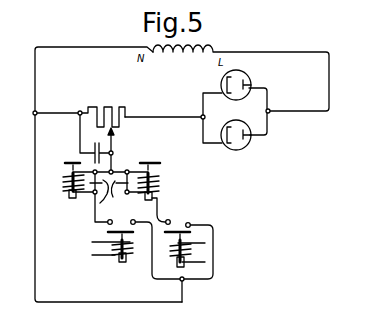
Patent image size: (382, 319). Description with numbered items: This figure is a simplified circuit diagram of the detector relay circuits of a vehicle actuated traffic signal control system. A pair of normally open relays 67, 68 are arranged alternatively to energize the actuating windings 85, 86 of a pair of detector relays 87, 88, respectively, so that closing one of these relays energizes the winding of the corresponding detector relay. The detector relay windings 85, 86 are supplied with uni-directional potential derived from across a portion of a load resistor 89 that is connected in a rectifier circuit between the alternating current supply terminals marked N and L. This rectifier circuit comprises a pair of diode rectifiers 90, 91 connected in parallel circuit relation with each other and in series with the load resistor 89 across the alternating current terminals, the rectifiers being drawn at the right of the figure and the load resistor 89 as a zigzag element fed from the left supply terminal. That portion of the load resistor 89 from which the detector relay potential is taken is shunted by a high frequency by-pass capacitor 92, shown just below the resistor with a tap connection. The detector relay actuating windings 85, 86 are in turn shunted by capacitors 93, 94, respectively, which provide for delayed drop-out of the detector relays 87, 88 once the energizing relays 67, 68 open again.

The normally open relay 67 is at (118, 257).
The normally open relay 68 is at (177, 261).
The actuating winding 85 is at (66, 177).
The actuating winding 86 is at (160, 185).
The detector relay 87 is at (69, 198).
The detector relay 88 is at (156, 197).
The load resistor 89 is at (112, 108).
The diode rectifier 90 is at (252, 78).
The diode rectifier 91 is at (247, 149).
The high frequency by-pass capacitor 92 is at (97, 146).
The capacitor 93 is at (100, 206).
The capacitor 94 is at (118, 201).